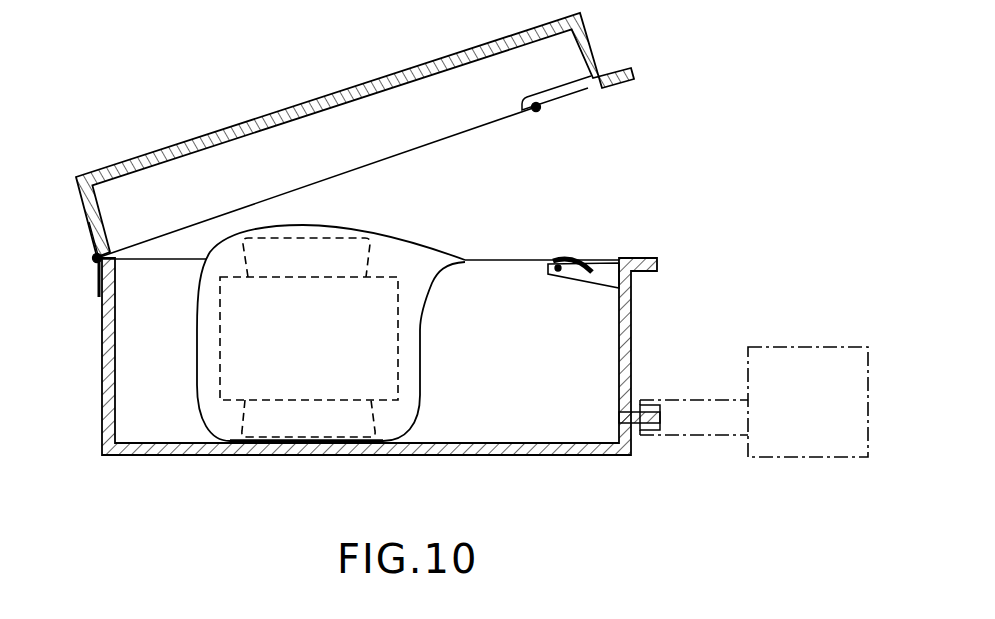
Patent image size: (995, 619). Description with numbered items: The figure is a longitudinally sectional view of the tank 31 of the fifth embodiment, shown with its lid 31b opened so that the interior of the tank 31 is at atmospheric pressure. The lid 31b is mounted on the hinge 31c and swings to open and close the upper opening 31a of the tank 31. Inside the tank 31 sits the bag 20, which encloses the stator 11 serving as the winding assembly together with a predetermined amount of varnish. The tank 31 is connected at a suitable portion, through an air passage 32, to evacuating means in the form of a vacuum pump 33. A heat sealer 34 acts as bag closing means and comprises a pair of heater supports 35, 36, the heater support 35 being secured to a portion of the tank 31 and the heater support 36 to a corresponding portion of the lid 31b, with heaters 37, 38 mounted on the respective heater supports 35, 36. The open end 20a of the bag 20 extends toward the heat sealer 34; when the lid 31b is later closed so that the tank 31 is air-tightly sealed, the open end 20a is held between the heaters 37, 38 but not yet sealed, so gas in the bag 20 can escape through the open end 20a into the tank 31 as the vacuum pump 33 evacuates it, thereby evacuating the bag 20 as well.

The stator 11 is at (398, 276).
The bag 20 is at (337, 227).
The open end 20a is at (578, 258).
The tank 31 is at (372, 330).
The upper opening 31a is at (610, 257).
The lid 31b is at (333, 90).
The hinge 31c is at (95, 261).
The suction pipe 32 is at (698, 400).
The vacuum pump 33 is at (775, 347).
The heat sealer 34 is at (374, 135).
The heater support 35 is at (598, 290).
The heater support 36 is at (560, 90).
The heater 37 is at (555, 258).
The heater 38 is at (539, 112).